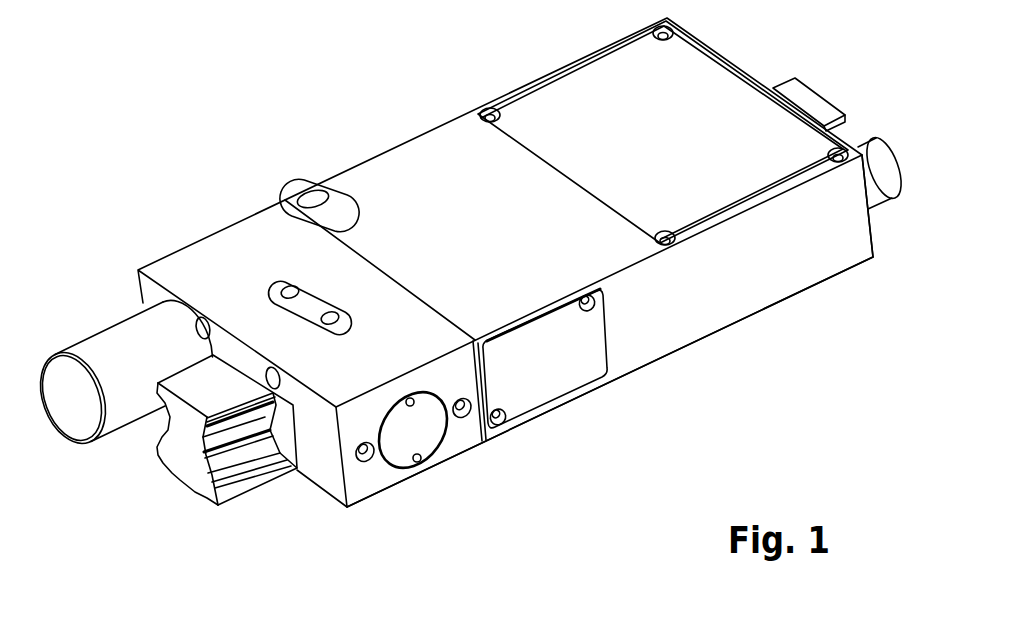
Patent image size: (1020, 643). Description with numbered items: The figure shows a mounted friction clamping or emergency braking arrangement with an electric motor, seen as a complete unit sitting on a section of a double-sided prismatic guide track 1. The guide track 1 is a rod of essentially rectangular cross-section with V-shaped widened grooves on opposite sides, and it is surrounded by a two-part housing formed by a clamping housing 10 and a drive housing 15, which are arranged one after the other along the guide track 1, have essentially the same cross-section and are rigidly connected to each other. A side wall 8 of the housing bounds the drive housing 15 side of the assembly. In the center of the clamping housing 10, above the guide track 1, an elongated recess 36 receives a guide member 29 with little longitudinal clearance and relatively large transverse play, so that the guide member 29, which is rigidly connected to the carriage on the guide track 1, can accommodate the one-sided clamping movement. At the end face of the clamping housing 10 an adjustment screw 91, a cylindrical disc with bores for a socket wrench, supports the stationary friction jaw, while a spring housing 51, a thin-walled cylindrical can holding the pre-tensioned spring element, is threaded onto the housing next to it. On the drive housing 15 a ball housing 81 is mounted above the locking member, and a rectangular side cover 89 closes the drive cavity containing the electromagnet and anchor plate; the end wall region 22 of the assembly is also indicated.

The guide track 1 is at (183, 447).
The side wall 8 is at (660, 315).
The clamping housing 10 is at (341, 519).
The drive housing 15 is at (764, 324).
The end wall 22 is at (308, 467).
The guide member 29 is at (310, 300).
The elongated recess 36 is at (284, 286).
The spring housing 51 is at (103, 353).
The ball housing 81 is at (343, 210).
The side cover 89 is at (528, 385).
The adjustment screw 91 is at (403, 440).